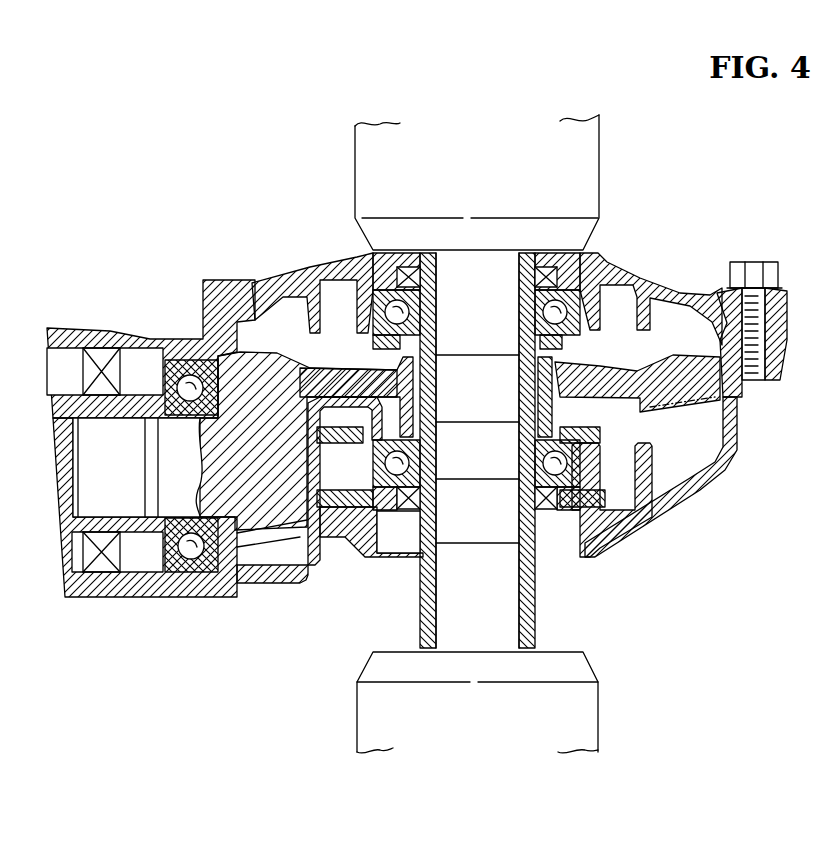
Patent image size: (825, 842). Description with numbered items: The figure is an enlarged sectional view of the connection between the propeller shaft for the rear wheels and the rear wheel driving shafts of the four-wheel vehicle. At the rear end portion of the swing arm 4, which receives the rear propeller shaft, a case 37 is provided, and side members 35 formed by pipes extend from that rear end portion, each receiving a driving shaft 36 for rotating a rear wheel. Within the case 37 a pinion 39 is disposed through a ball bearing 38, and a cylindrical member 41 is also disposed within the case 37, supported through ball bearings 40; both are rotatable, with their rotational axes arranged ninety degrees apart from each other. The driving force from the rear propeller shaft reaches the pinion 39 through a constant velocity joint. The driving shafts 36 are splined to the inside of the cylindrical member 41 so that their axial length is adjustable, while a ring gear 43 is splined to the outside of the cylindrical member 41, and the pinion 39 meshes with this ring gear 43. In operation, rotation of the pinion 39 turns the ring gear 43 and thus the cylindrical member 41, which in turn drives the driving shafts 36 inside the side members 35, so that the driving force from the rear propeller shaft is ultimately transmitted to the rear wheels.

The swing arm 4 is at (107, 333).
The side members 35 is at (597, 150).
The driving shafts 36 is at (493, 278).
The case 37 is at (276, 283).
The ball bearing 38 is at (187, 385).
The pinion 39 is at (276, 545).
The ball bearings 40 is at (592, 287).
The cylindrical member 41 is at (528, 577).
The ring gear 43 is at (738, 412).